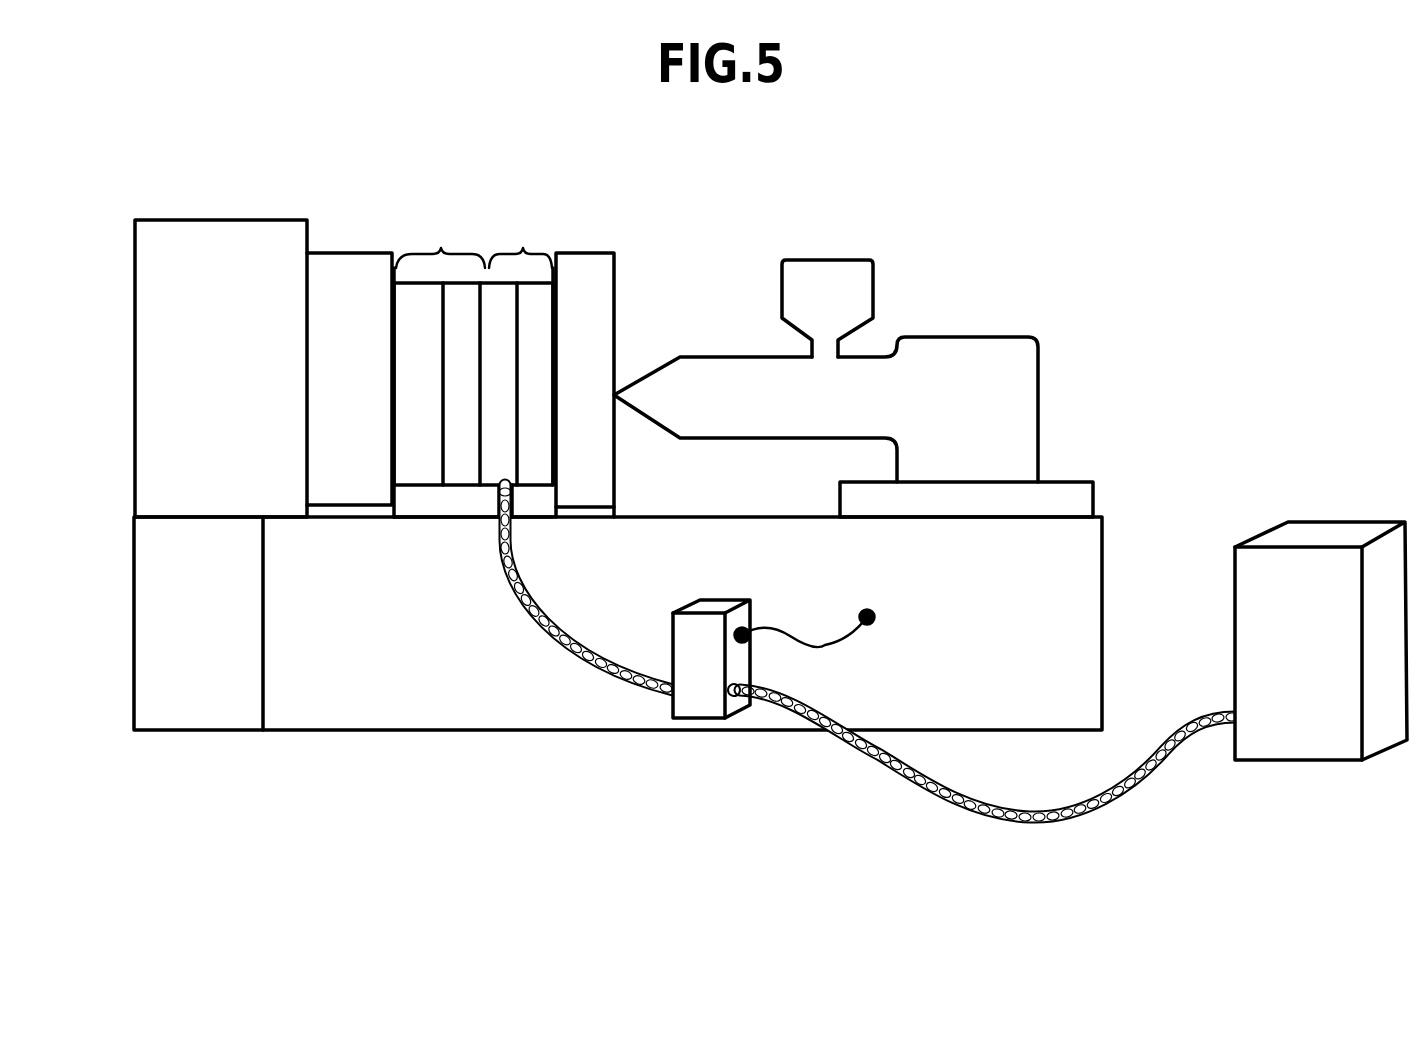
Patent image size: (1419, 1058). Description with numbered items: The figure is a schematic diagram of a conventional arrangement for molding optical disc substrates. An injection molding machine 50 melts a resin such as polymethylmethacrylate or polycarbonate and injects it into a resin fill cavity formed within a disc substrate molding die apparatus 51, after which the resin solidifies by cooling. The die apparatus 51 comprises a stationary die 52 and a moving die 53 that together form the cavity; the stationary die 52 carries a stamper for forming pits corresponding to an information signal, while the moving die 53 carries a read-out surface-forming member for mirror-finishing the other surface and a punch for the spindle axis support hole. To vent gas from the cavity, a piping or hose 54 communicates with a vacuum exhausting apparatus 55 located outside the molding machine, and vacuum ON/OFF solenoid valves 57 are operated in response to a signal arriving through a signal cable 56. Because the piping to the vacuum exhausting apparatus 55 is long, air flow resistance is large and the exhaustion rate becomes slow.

The injection molding machine 50 is at (992, 347).
The disc substrate molding die apparatus 51 is at (476, 328).
The stationary die 52 is at (520, 349).
The moving die 53 is at (440, 349).
The hose 54 is at (1002, 822).
The vacuum exhausting apparatus 55 is at (1296, 752).
The signal cable 56 is at (795, 638).
The vacuum ON/OFF solenoid valves 57 is at (697, 716).